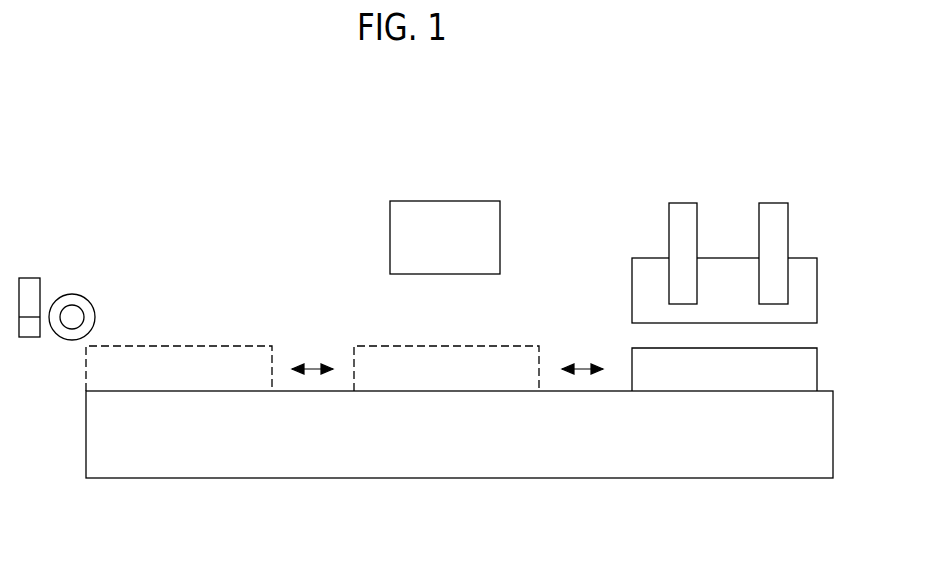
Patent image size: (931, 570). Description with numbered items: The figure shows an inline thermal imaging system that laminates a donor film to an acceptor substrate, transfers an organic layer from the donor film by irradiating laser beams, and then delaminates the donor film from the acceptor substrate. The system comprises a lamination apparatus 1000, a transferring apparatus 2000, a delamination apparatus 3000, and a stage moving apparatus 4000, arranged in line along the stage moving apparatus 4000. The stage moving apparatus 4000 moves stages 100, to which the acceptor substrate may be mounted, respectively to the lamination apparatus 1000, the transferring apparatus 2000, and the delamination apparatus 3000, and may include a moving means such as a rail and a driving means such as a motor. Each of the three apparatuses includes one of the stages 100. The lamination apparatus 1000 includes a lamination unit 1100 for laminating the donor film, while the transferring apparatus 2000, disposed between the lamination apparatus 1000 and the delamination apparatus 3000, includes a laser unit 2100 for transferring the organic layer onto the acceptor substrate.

The stage 100 is at (195, 373).
The lamination apparatus 1000 is at (684, 235).
The lamination unit 1100 is at (635, 288).
The transferring apparatus 2000 is at (401, 210).
The laser unit 2100 is at (380, 200).
The delamination apparatus 3000 is at (98, 292).
The stage moving apparatus 4000 is at (508, 468).